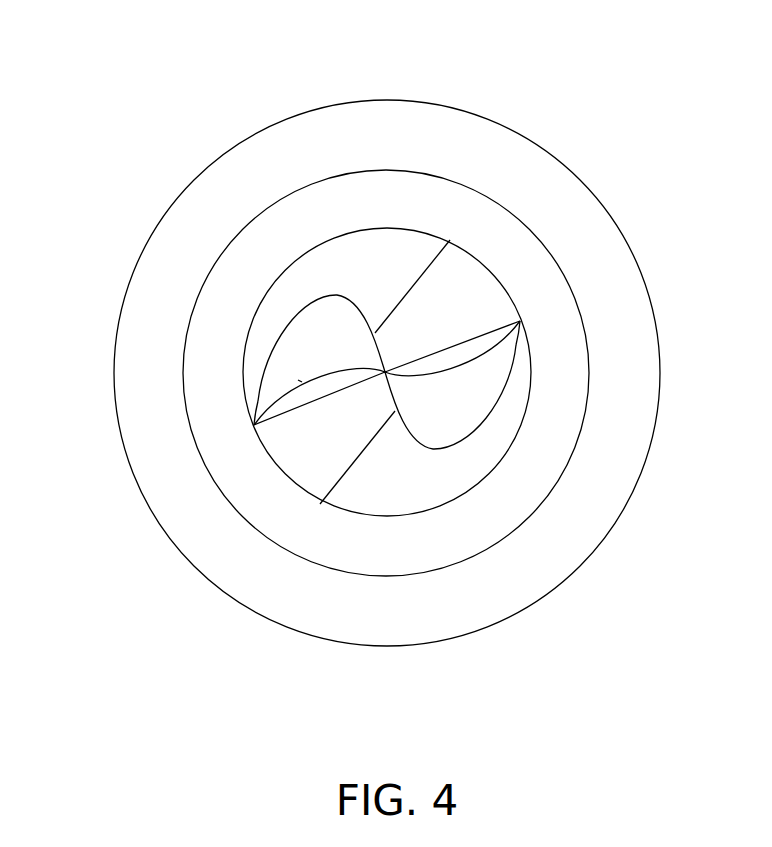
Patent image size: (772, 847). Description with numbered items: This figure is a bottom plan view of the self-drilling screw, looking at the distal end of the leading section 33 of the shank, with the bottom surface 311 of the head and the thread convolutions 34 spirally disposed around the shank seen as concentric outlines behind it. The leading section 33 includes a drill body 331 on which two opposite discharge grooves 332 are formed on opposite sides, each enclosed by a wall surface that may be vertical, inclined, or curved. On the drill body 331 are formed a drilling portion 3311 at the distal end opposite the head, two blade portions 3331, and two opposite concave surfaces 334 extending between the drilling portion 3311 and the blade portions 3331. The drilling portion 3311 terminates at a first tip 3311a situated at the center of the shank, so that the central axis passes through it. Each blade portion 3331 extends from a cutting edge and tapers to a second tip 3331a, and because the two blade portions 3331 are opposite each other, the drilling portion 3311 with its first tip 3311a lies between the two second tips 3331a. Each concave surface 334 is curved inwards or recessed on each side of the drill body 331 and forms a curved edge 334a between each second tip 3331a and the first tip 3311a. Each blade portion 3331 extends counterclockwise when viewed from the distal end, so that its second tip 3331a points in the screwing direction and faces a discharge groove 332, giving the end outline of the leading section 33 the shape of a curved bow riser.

The bottom surface 311 is at (420, 137).
The thread convolutions 34 is at (338, 205).
The leading section 33 is at (379, 400).
The drill body 331 is at (284, 268).
The drilling portion 3311 is at (334, 402).
The first tip 3311a is at (385, 372).
The discharge grooves 332 is at (470, 345).
The blade portions 3331 is at (537, 333).
The second tip 3331a is at (520, 321).
The concave surface 334 is at (288, 358).
The curved edge 334a is at (300, 381).